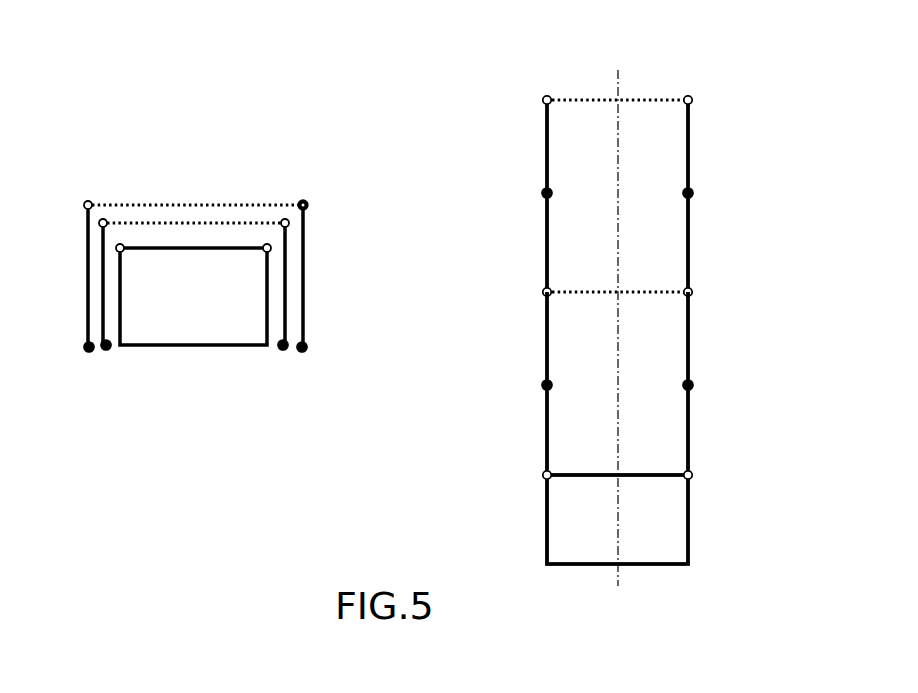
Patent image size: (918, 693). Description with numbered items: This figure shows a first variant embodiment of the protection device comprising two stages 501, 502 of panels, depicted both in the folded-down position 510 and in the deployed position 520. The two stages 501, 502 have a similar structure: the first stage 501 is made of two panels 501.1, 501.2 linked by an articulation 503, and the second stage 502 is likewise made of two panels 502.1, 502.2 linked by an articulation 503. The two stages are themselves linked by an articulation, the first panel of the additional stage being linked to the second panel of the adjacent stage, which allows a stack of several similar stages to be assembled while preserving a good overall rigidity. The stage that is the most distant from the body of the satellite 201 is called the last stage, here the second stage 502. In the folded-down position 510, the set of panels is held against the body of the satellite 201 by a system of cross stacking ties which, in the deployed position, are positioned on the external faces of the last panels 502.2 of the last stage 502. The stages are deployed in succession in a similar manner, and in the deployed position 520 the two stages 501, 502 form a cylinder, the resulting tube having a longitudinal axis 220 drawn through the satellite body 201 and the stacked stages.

The body of the satellite 201 is at (637, 545).
The longitudinal axis 220 is at (618, 78).
The first stage 501 is at (625, 390).
The first panel of the first stage 501.1 is at (546, 435).
The second panel of the first stage 501.2 is at (546, 352).
The second stage 502 is at (630, 193).
The first panel of the second stage 502.1 is at (546, 247).
The last panel of the last stage 502.2 is at (546, 157).
The articulation 503 is at (546, 292).
The folded-down position 510 is at (72, 361).
The deployed position 520 is at (634, 332).